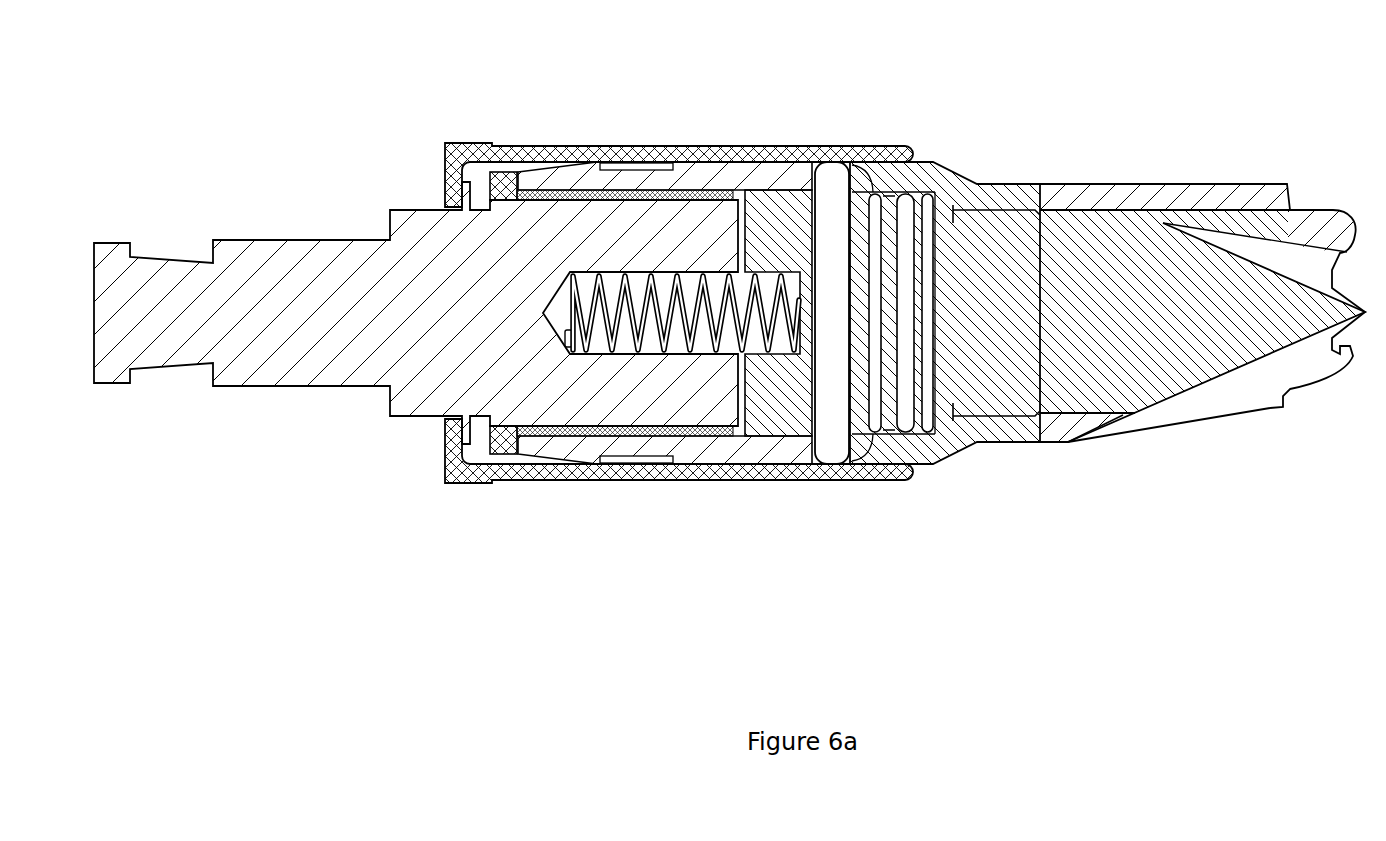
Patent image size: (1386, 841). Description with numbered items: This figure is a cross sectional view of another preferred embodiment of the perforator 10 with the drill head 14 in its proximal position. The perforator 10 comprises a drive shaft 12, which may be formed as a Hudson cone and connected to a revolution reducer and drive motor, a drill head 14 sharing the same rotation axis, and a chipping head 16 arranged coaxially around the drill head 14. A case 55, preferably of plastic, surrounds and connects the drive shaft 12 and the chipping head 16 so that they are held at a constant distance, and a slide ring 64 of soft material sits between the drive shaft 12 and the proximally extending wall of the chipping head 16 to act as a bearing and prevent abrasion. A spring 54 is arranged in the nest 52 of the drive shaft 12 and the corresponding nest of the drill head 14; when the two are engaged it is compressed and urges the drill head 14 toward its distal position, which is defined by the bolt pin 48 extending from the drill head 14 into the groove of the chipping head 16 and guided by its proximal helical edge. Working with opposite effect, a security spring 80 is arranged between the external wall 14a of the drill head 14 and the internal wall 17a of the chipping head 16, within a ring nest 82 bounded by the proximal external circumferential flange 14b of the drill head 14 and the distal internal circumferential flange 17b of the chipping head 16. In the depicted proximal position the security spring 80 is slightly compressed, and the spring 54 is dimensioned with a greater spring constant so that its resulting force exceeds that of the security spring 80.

The perforator 10 is at (232, 113).
The drive shaft 12 is at (337, 258).
The drill head 14 is at (1085, 268).
The external wall of the drill head 14a is at (868, 190).
The proximal external circumferential flange of the drill head 14b is at (864, 148).
The chipping head 16 is at (1208, 183).
The internal wall of the chipping head 17a is at (917, 195).
The distal internal circumferential flange of the chipping head 17b is at (926, 195).
The bolt pin 48 is at (832, 442).
The nest in the distal end of the drive shaft 52 is at (590, 365).
The spring 54 is at (690, 276).
The case 55 is at (592, 146).
The slide ring 64 is at (504, 170).
The security spring 80 is at (951, 200).
The ring nest 82 is at (890, 195).